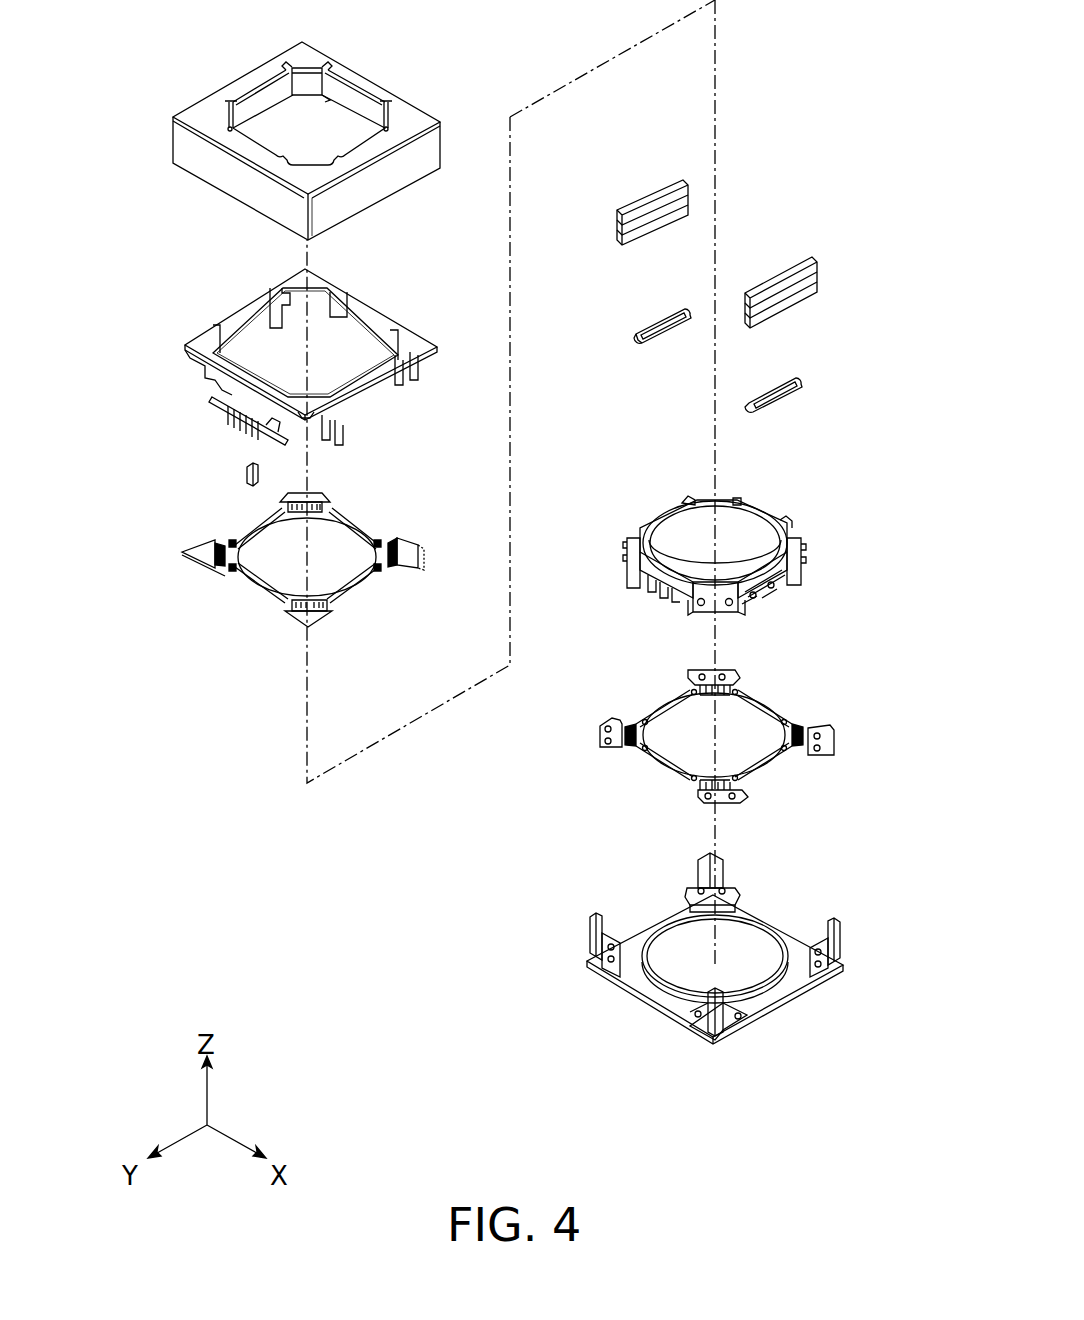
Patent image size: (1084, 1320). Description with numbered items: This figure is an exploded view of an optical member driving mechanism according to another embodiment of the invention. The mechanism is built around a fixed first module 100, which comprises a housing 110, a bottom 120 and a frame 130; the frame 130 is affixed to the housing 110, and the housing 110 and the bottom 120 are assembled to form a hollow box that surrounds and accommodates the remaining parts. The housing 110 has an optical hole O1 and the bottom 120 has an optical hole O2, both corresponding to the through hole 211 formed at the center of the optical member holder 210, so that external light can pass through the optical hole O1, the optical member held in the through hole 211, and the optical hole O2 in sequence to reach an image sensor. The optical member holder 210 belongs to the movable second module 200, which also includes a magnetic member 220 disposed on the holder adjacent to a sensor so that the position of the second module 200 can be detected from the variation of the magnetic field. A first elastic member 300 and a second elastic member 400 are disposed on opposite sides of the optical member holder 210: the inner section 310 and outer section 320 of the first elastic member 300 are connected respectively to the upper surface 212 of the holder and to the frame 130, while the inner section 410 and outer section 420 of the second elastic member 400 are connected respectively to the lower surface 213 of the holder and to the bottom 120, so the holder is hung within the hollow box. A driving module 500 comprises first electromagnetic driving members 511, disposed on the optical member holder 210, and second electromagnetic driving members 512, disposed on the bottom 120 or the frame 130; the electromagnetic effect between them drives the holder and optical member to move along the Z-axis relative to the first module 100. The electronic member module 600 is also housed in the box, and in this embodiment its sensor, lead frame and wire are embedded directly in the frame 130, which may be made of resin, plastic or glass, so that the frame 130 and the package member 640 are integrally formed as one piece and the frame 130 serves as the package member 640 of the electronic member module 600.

The first module 100 is at (383, 870).
The housing 110 is at (185, 138).
The optical hole O1 is at (350, 100).
The bottom 120 is at (595, 942).
The optical hole O2 is at (735, 935).
The frame 130 is at (200, 335).
The package member 640 is at (215, 383).
The electronic member module 600 is at (214, 421).
The second module 200 is at (383, 990).
The optical member holder 210 is at (635, 575).
The through hole 211 is at (758, 527).
The upper surface 212 is at (680, 498).
The lower surface 213 is at (775, 590).
The magnetic member 220 is at (247, 473).
The first elastic member 300 is at (381, 524).
The inner section 310 is at (270, 576).
The outer section 320 is at (200, 553).
The second elastic member 400 is at (793, 712).
The inner section 410 is at (680, 745).
The outer section 420 is at (605, 725).
The driving module 500 is at (843, 255).
The first electromagnetic driving member 511 is at (660, 322).
The second electromagnetic driving member 512 is at (650, 200).